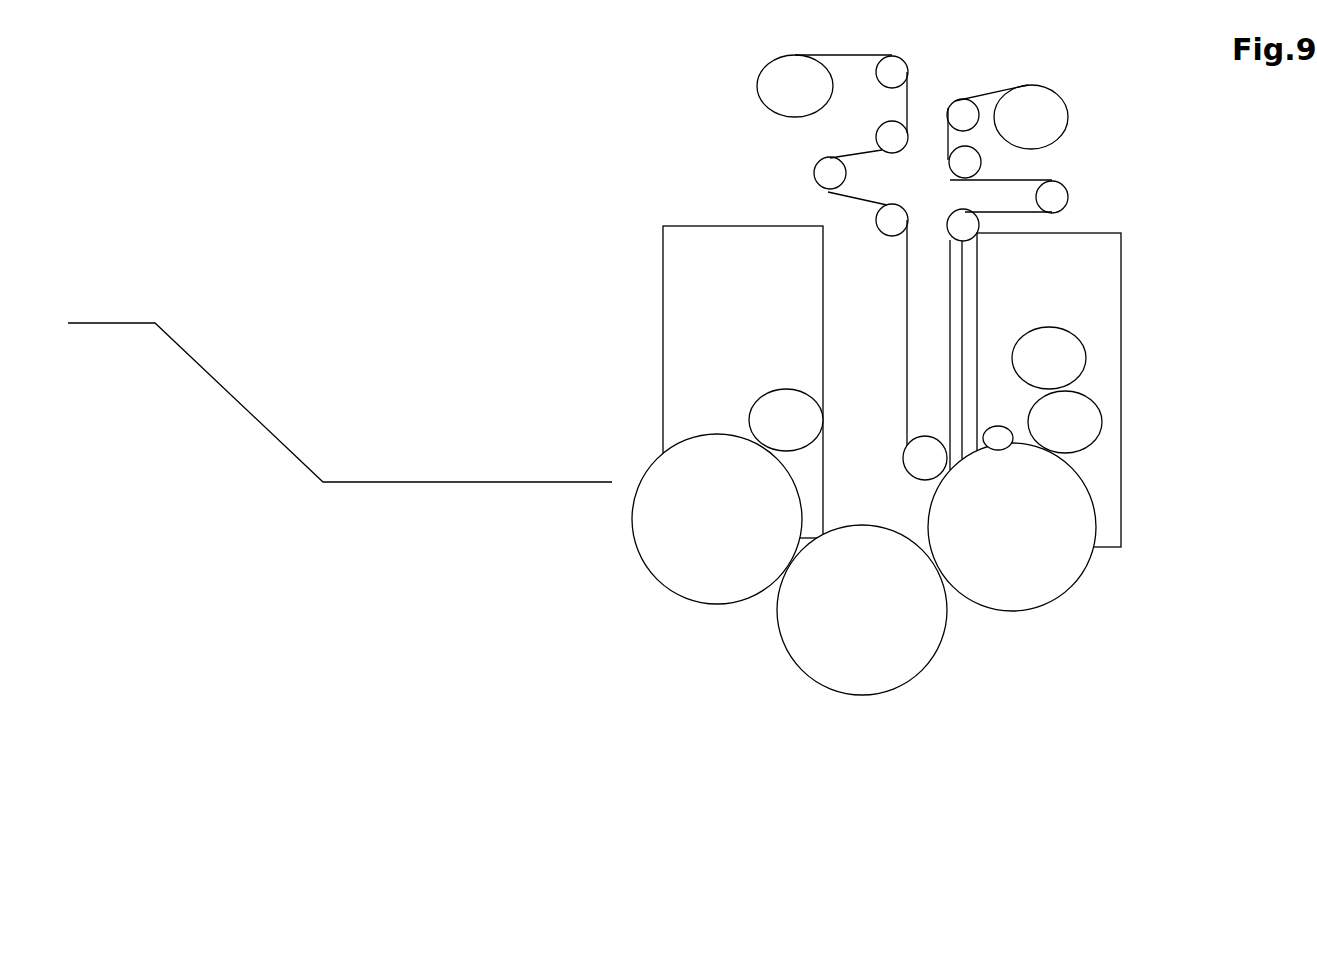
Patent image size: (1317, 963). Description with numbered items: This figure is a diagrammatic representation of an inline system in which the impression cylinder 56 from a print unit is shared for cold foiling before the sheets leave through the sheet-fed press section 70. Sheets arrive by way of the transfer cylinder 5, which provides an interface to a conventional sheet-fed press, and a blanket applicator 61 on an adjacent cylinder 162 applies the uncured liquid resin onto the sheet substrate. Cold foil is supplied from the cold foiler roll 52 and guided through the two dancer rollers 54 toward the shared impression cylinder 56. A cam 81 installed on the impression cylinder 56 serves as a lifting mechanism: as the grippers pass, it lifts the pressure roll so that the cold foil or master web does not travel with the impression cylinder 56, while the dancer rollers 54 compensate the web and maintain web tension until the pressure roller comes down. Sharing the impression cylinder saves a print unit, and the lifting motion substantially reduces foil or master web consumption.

The sheet-fed press section 70 is at (198, 374).
The dancer roller 54 is at (821, 170).
The cold foiler roll 52 is at (1072, 120).
The blanket applicator 61 is at (768, 409).
The transfer drum 162 is at (696, 503).
The transfer cylinder 5 is at (855, 548).
The cam 81 is at (962, 483).
The impression cylinder 56 is at (997, 437).